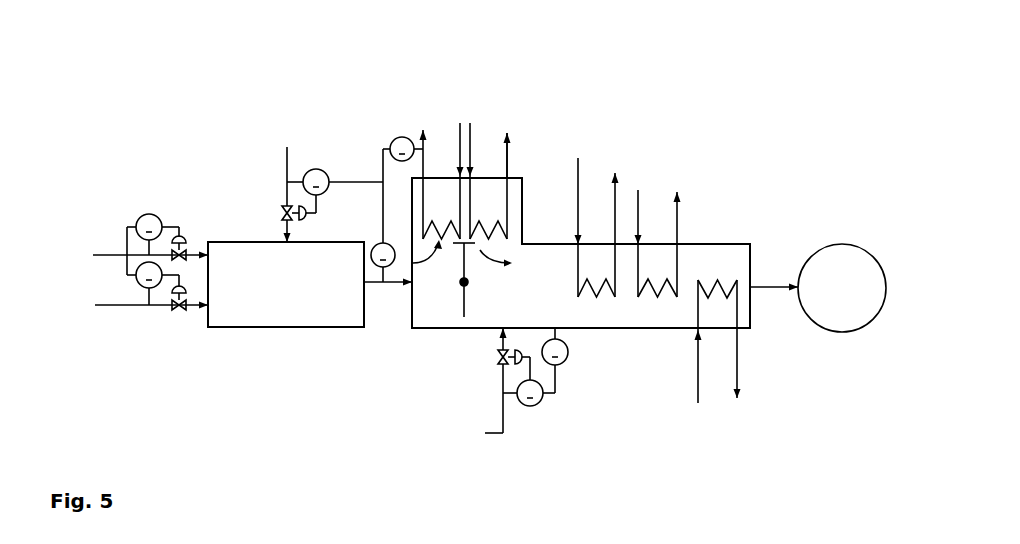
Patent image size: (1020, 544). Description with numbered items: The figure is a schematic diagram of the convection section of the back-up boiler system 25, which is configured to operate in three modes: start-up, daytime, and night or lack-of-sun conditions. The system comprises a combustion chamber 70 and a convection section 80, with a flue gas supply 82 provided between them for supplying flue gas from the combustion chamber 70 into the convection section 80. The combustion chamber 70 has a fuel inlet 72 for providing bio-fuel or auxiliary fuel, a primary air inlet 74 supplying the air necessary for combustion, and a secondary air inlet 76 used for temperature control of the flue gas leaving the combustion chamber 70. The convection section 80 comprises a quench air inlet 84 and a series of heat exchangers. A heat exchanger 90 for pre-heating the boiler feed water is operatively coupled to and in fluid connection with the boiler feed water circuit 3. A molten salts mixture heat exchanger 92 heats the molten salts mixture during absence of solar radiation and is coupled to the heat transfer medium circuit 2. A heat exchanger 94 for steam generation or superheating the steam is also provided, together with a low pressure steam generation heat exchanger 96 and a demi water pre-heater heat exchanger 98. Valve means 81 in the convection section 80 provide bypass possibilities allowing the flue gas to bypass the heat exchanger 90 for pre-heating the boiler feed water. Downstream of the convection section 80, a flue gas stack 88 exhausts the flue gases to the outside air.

The back-up boiler system 25 is at (198, 188).
The combustion chamber 70 is at (293, 299).
The fuel inlet 72 is at (150, 244).
The primary air inlet 74 is at (151, 286).
The secondary air inlet 76 is at (326, 181).
The flue gas supply 82 is at (393, 226).
The convection section 80 is at (536, 309).
The valve means 81 is at (452, 280).
The heat exchanger for steam generation or superheating the steam 94 is at (442, 181).
The heat exchanger for pre-heating the boiler feed water 90 is at (487, 181).
The boiler feed water circuit 3 is at (518, 155).
The heat transfer medium circuit 2 is at (590, 201).
The molten salts mixture heat exchanger 92 is at (598, 235).
The low pressure steam generation heat exchanger 96 is at (658, 243).
The demi water pre-heater heat exchanger 98 is at (718, 341).
The flue gas stack 88 is at (818, 288).
The quench air inlet 84 is at (513, 380).